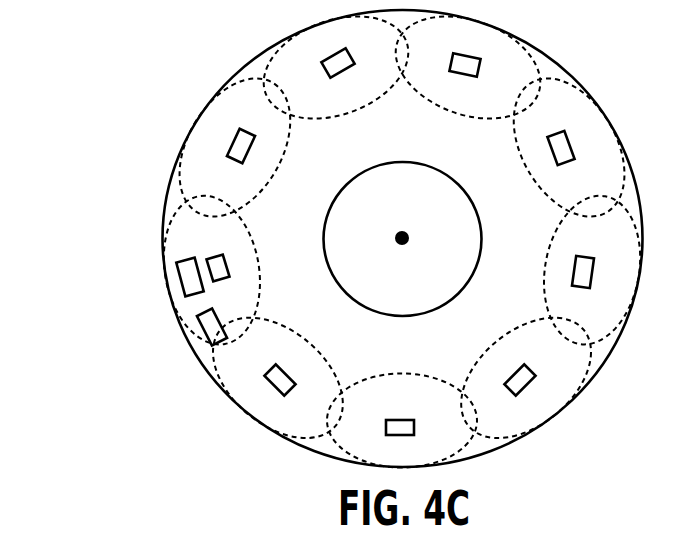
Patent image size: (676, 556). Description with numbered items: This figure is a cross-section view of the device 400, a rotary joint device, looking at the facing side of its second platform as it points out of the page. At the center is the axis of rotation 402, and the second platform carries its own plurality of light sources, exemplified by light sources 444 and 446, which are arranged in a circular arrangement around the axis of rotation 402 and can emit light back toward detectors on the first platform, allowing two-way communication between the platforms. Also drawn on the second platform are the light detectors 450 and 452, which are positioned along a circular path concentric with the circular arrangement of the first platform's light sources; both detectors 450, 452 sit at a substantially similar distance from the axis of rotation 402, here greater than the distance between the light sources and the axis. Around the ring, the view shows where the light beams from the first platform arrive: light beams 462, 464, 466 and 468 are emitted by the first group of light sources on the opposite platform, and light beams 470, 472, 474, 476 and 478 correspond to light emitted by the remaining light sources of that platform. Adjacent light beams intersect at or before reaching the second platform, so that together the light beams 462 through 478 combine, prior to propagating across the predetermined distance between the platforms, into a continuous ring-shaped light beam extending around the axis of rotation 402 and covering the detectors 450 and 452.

The device 400 is at (60, 65).
The axis of rotation 402 is at (399, 236).
The light source 444 is at (228, 266).
The light source 446 is at (276, 367).
The light detector 450 is at (184, 282).
The light detector 452 is at (205, 327).
The light beam 462 is at (296, 145).
The light beam 464 is at (243, 224).
The light beam 466 is at (317, 443).
The light beam 468 is at (440, 378).
The light beam 470 is at (499, 339).
The light beam 472 is at (545, 282).
The light beam 474 is at (626, 188).
The light beam 476 is at (473, 118).
The light beam 478 is at (338, 115).